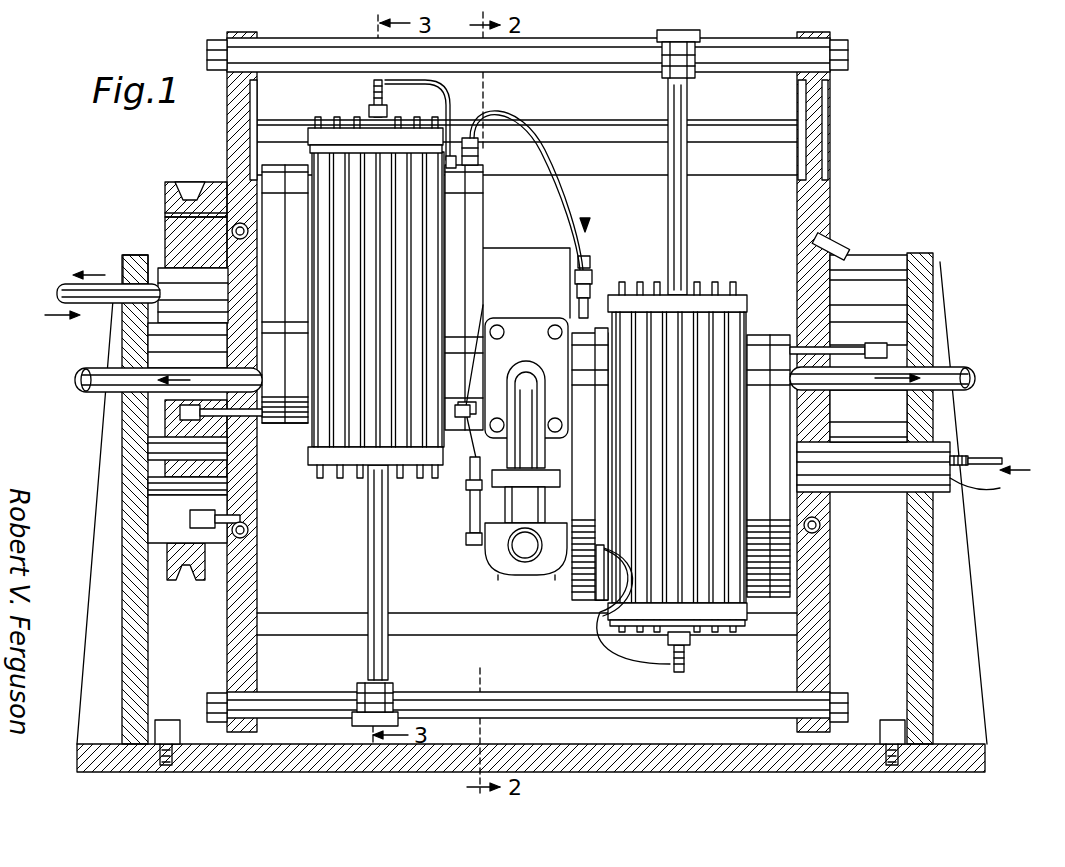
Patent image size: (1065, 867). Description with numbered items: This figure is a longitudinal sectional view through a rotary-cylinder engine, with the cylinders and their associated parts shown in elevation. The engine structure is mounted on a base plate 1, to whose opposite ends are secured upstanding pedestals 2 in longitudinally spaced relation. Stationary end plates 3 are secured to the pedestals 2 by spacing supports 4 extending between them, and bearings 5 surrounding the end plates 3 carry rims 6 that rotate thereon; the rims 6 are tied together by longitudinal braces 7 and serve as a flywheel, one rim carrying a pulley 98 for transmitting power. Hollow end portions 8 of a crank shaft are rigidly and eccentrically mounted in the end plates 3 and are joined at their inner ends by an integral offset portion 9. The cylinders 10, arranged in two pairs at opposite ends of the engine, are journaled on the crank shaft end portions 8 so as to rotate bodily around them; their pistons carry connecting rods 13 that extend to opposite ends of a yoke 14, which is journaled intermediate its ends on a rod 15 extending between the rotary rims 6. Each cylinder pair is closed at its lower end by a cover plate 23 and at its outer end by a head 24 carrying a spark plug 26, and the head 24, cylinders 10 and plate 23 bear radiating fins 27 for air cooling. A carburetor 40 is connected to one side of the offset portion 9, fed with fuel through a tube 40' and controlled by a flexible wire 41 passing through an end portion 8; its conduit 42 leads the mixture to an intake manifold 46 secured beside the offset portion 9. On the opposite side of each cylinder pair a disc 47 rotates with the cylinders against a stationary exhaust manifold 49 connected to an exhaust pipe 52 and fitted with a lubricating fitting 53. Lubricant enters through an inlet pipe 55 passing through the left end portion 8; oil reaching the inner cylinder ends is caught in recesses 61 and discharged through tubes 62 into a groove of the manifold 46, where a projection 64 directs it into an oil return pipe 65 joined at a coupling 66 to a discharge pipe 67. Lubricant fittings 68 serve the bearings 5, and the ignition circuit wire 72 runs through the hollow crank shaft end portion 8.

The base plate 1 is at (938, 768).
The pedestals 2 is at (122, 574).
The end plates 3 is at (200, 250).
The spacing supports 4 is at (150, 466).
The bearings 5 is at (166, 201).
The rims 6 is at (228, 118).
The longitudinal braces 7 is at (758, 123).
The crank shaft end portions 8 is at (180, 272).
The offset portion 9 is at (540, 258).
The cylinders 10 is at (304, 160).
The connecting rods 13 is at (690, 112).
The yoke 14 is at (700, 37).
The rod 15 is at (598, 48).
The cover plate 23 is at (352, 468).
The head 24 is at (345, 138).
The spark plug 26 is at (372, 106).
The radiating fins 27 is at (330, 456).
The carburetor 40 is at (503, 525).
The tube 40' is at (730, 488).
The flexible wire 41 is at (990, 458).
The conduit 42 is at (508, 374).
The intake manifold 46 is at (482, 215).
The disc 47 is at (303, 430).
The exhaust manifold 49 is at (272, 168).
The exhaust pipe 52 is at (100, 392).
The lubricating fitting 53 is at (178, 412).
The inlet pipe 55 is at (100, 302).
The recesses 61 is at (486, 306).
The tubes 62 is at (476, 136).
The projection 64 is at (440, 84).
The oil return pipe 65 is at (498, 114).
The coupling 66 is at (590, 272).
The discharge pipe 67 is at (122, 276).
The lubricant fittings 68 is at (205, 530).
The circuit wire 72 is at (974, 490).
The pulley 98 is at (190, 198).